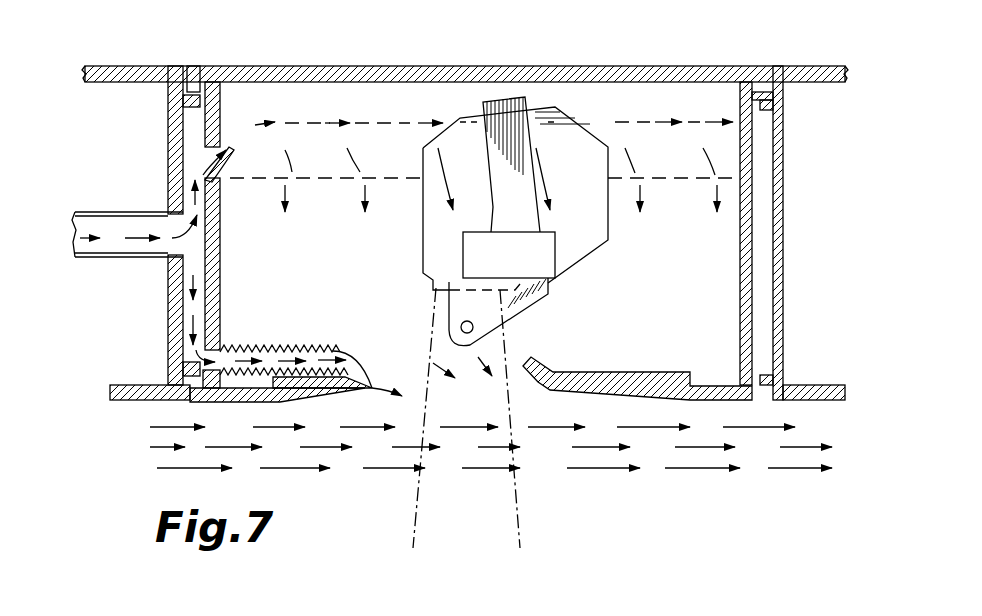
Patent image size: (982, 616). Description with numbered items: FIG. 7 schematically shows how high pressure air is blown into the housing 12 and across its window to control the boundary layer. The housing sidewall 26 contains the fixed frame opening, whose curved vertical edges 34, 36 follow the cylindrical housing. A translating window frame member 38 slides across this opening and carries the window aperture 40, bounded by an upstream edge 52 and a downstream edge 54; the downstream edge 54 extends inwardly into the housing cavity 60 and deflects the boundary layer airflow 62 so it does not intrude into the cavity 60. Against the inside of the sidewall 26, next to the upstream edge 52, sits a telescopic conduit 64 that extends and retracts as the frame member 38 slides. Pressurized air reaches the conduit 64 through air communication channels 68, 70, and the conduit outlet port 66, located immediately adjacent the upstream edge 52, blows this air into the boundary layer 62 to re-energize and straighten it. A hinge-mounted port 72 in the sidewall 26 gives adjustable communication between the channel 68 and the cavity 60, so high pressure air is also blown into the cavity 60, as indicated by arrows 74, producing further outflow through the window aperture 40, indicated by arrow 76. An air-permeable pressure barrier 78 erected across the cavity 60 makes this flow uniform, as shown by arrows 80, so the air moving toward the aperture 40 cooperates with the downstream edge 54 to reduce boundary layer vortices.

The housing 12 is at (503, 66).
The sidewall 26 is at (562, 72).
The vertical edge 34 is at (622, 372).
The vertical edge 36 is at (348, 382).
The window frame member 38 is at (300, 371).
The window aperture 40 is at (476, 397).
The upstream edge 52 is at (341, 393).
The downstream edge 54 is at (546, 386).
The housing cavity 60 is at (786, 247).
The boundary layer airflow 62 is at (378, 472).
The telescopic conduit 64 is at (266, 347).
The outlet port 66 is at (373, 388).
The air communication channel 68 is at (205, 272).
The air communication channel 70 is at (118, 213).
The port 72 is at (235, 163).
The arrows 74 is at (418, 128).
The arrow 76 is at (418, 352).
The air-permeable pressure barrier 78 is at (673, 182).
The arrows 80 is at (370, 198).